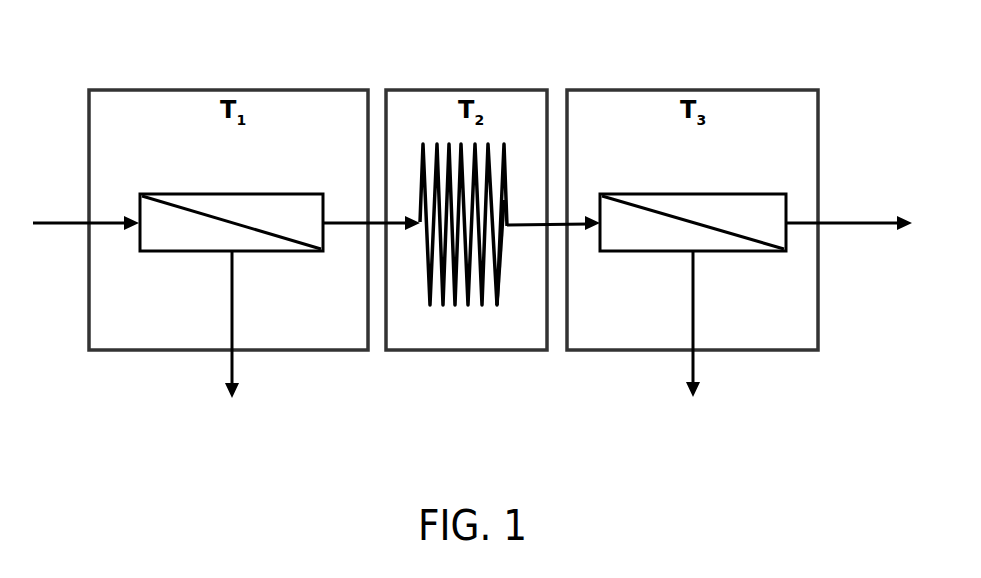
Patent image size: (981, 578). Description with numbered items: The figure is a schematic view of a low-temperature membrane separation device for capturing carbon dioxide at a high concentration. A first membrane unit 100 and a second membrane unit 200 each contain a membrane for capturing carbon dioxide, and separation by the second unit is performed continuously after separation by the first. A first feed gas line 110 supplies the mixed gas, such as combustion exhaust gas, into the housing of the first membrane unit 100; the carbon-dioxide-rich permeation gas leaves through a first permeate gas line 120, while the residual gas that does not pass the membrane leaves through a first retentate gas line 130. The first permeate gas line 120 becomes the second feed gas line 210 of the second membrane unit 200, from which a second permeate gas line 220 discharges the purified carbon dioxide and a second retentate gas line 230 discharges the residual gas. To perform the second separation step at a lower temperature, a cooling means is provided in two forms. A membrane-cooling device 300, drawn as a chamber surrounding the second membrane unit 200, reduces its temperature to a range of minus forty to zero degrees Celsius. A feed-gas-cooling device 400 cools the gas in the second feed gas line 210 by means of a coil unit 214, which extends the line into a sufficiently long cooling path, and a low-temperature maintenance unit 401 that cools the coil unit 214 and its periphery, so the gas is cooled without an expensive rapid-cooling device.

The first membrane unit 100 is at (193, 193).
The first feed gas line 110 is at (42, 218).
The first permeate gas line 120 is at (348, 221).
The first retentate gas line 130 is at (240, 366).
The second membrane unit 200 is at (676, 194).
The second feed gas line 210 is at (536, 221).
The second permeate gas line 220 is at (846, 221).
The second retentate gas line 230 is at (700, 366).
The membrane-cooling device 300 is at (762, 90).
The feed-gas-cooling device 400 is at (457, 90).
The low-temperature maintenance unit 401 is at (441, 320).
The coil unit 214 is at (502, 306).